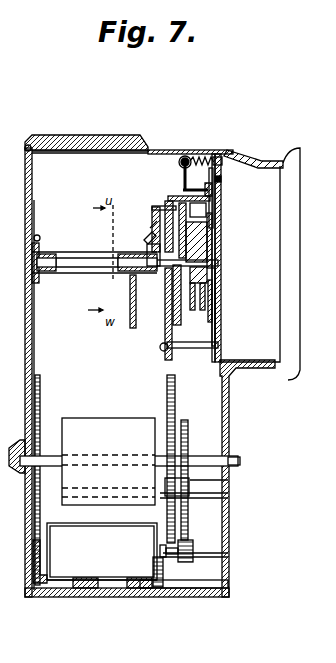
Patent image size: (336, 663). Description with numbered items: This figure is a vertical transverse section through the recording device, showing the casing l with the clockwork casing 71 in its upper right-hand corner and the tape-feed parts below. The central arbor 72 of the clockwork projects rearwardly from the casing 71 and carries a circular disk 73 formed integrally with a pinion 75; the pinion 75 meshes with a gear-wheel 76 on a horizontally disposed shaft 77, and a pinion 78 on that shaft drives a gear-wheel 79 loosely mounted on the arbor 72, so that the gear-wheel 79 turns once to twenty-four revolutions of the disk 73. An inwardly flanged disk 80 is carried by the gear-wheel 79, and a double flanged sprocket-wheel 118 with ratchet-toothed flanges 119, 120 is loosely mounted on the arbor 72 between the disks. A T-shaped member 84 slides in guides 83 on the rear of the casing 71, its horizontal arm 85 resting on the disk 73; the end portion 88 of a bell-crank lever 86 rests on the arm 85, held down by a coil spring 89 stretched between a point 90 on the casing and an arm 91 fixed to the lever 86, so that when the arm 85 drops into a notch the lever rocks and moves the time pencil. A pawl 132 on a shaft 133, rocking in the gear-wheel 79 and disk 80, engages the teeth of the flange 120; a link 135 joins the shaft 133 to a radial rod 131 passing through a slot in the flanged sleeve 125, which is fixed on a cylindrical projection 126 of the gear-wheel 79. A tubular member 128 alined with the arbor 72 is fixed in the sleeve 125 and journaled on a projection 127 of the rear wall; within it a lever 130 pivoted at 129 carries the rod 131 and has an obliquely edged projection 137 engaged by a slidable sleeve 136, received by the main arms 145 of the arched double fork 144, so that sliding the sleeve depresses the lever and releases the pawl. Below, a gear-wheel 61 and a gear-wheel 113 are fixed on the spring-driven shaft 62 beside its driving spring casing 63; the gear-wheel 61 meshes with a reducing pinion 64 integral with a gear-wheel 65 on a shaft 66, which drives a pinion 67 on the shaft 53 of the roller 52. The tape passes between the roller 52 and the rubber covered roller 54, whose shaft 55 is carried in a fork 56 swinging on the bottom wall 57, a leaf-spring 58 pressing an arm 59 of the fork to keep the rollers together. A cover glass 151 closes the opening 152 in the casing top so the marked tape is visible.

The cover glass 151 is at (100, 137).
The opening or slot 152 is at (70, 154).
The end portion of bell-crank lever 88 is at (232, 156).
The clockwork casing 71 is at (275, 200).
The central arbor 72 is at (220, 254).
The bell-crank lever 86 is at (179, 163).
The vertically disposed arm 91 is at (185, 157).
The coil spring 89 is at (200, 157).
The spring anchorage on casing 90 is at (217, 157).
The horizontally extending arm 85 is at (200, 189).
The guides 83 is at (222, 180).
The T-shaped member 84 is at (214, 196).
The pawl 132 is at (180, 196).
The shaft 133 is at (165, 205).
The gear-wheel 79 is at (180, 205).
The flange of sprocket-wheel 120 is at (199, 210).
The circular disk 73 is at (222, 236).
The flange of sprocket-wheel 119 is at (213, 222).
The pinion 75 is at (220, 273).
The double flanged sprocket-wheel 118 is at (213, 284).
The gear-wheel 76 is at (220, 320).
The inwardly flanged disk 80 is at (173, 303).
The flanged collar or sleeve 125 is at (175, 292).
The shaft 77 is at (188, 343).
The pinion 78 is at (162, 343).
The cylindrical projection 127 is at (48, 253).
The tubular member 128 is at (82, 252).
The pivot 129 is at (57, 273).
The lever 130 is at (98, 273).
The main arms of double fork 145 is at (127, 283).
The arched double fork 144 is at (119, 310).
The cylindrical projection 126 is at (155, 210).
The radially extending rod 131 is at (153, 212).
The slidable sleeve 136 is at (147, 224).
The link 135 is at (157, 212).
The obliquely edged projection 137 is at (153, 224).
The gear-wheel 113 is at (41, 403).
The shaft 62 is at (212, 462).
The driving spring casing 63 is at (103, 428).
The gear-wheel 61 is at (172, 406).
The reducing pinion 64 is at (197, 480).
The shaft 66 is at (215, 502).
The gear-wheel 65 is at (228, 479).
The pinion 67 is at (192, 544).
The shaft 53 is at (217, 553).
The casing l is at (230, 528).
The rubber covered roller 54 is at (118, 562).
The bottom wall 57 is at (83, 590).
The fork 56 is at (37, 578).
The roller 52 is at (150, 583).
The leaf-spring 58 is at (184, 595).
The arm 59 is at (163, 550).
The shaft 55 is at (188, 566).